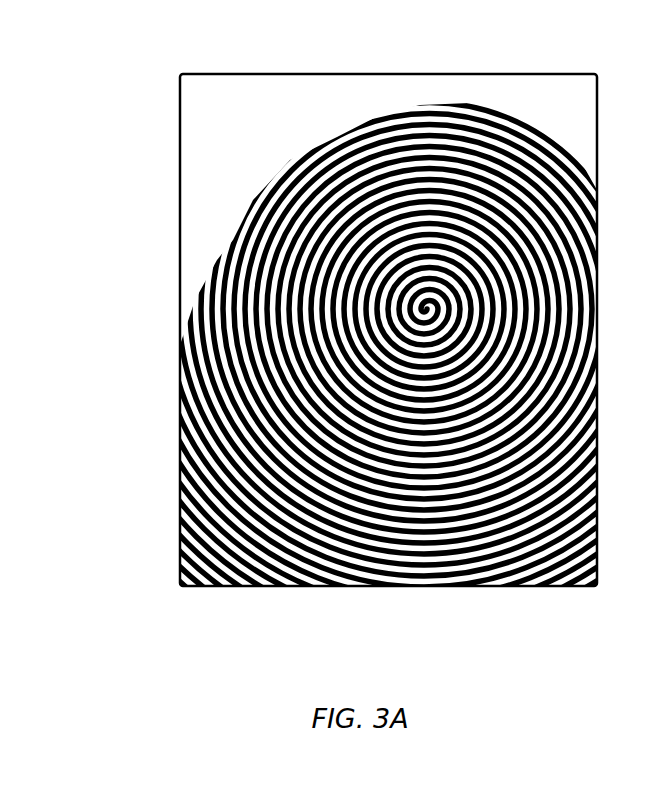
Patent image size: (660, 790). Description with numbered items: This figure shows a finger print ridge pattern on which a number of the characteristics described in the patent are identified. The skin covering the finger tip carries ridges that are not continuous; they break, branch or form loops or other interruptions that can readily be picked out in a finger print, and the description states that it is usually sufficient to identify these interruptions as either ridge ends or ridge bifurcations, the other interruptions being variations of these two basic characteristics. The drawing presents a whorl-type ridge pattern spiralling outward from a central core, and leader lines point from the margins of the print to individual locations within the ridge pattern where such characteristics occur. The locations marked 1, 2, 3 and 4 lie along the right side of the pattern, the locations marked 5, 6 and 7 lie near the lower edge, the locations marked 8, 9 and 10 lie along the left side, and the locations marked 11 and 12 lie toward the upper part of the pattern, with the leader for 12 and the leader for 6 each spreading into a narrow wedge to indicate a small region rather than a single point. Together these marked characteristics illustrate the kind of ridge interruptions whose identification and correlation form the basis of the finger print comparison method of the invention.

The ridge region 1 is at (527, 230).
The ridge region 2 is at (513, 297).
The ridge region 3 is at (480, 328).
The ridge region 4 is at (493, 373).
The ridge region 5 is at (440, 480).
The ridge region 6 is at (389, 489).
The ridge region 7 is at (330, 490).
The ridge region 8 is at (307, 393).
The ridge region 9 is at (267, 355).
The ridge region 10 is at (290, 298).
The ridge region 11 is at (287, 215).
The ridge region 12 is at (367, 205).